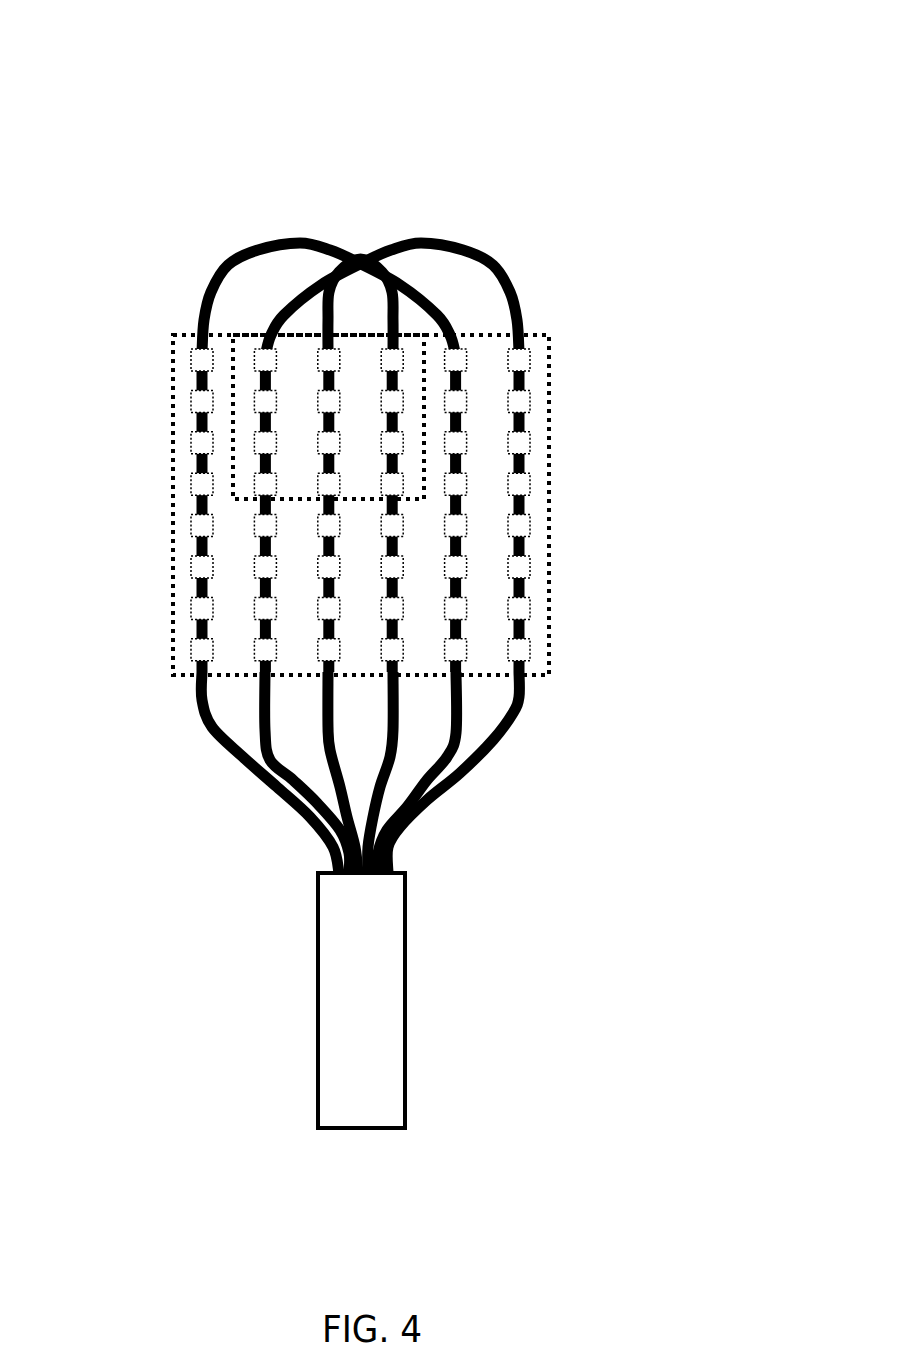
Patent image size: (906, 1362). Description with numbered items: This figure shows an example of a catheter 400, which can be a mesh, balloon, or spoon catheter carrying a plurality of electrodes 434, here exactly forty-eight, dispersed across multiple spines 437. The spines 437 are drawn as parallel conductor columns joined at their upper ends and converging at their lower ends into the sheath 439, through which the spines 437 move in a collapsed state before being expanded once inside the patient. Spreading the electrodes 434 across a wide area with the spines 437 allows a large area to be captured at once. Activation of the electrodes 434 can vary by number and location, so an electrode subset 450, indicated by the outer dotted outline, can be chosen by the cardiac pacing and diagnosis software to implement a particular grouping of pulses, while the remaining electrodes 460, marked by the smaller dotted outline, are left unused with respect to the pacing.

The catheter 400 is at (687, 86).
The remaining electrodes 460 is at (300, 340).
The spines 437 is at (462, 238).
The electrodes 434 is at (537, 353).
The electrode subset 450 is at (555, 628).
The sheath 439 is at (405, 1022).